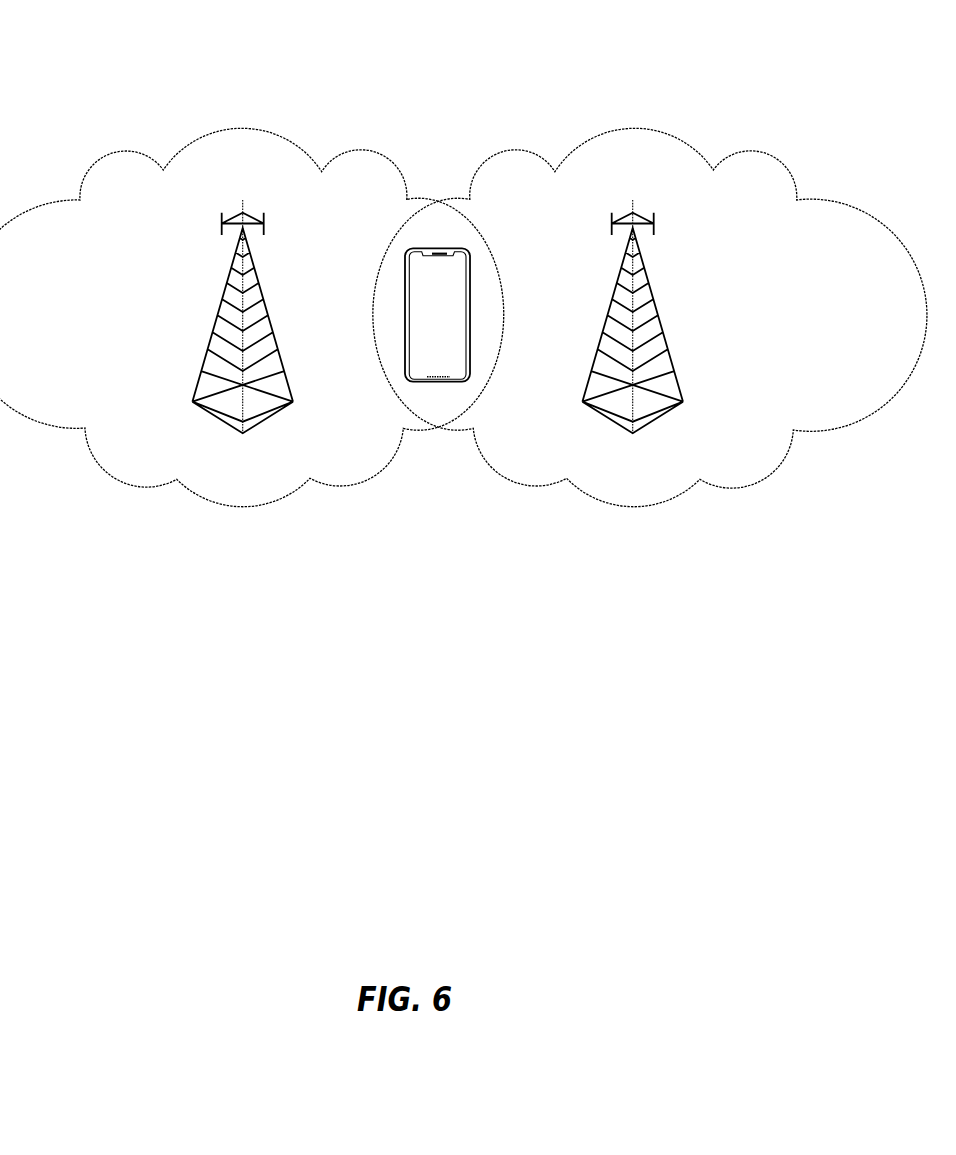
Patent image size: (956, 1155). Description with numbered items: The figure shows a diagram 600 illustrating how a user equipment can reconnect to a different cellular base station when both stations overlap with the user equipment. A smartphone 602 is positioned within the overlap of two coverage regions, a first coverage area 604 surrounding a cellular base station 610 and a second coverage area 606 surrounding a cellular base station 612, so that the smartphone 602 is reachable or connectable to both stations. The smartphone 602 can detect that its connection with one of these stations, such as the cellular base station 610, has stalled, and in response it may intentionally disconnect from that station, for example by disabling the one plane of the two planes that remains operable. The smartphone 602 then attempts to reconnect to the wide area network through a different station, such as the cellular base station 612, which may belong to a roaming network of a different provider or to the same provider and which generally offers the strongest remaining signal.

The wireless communication system 600 is at (82, 64).
The smartphone 602 is at (437, 248).
The first network coverage area 604 is at (117, 153).
The second network coverage area 606 is at (507, 152).
The cellular base station 610 is at (270, 320).
The cellular base station 612 is at (660, 322).